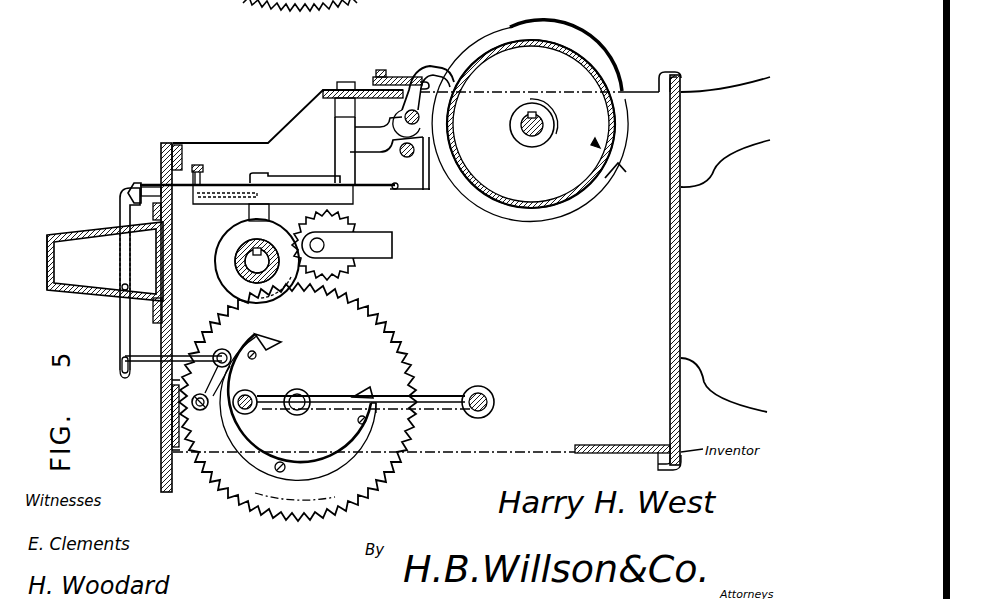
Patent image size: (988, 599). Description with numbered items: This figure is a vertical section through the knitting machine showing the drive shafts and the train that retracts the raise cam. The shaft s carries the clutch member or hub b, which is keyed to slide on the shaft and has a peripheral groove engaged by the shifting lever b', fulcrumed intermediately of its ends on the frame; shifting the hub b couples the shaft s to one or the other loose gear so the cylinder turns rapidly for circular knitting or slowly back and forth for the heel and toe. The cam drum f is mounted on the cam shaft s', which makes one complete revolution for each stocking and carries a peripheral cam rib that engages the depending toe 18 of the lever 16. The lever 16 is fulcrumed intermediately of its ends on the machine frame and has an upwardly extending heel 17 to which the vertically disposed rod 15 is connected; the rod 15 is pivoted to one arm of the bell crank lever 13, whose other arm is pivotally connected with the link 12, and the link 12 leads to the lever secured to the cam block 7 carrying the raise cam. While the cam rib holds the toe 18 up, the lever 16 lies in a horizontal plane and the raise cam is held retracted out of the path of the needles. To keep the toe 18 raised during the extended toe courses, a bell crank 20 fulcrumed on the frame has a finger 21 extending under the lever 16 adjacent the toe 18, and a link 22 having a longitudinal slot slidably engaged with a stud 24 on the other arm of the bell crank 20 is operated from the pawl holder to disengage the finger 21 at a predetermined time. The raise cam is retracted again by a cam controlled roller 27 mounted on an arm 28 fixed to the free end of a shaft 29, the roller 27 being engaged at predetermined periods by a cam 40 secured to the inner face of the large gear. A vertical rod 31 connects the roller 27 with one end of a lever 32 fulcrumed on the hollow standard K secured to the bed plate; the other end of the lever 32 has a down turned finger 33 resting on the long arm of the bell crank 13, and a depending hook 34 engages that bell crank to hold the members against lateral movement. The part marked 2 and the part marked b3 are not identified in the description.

The shaft 2 is at (430, 407).
The block 7 is at (285, 522).
The link 12 is at (163, 150).
The bell crank lever 13 is at (88, 248).
The vertically disposed rod 15 is at (230, 186).
The lever 16 is at (443, 183).
The heel 17 is at (397, 190).
The toe 18 is at (440, 63).
The bell crank 20 is at (397, 76).
The finger 21 is at (462, 100).
The link 22 is at (423, 78).
The stud 24 is at (378, 70).
The cam controlled roller 27 is at (218, 348).
The arm 28 is at (172, 388).
The shaft 29 is at (172, 435).
The vertical rod 31 is at (140, 357).
The lever 32 is at (121, 338).
The down turned finger 33 is at (132, 205).
The depending hook 34 is at (132, 183).
The cam 40 is at (232, 473).
The clutch member or hub b is at (238, 253).
The shifting lever b' is at (268, 173).
The screw b3 is at (195, 165).
The cam drum f is at (597, 172).
The shaft s is at (340, 269).
The cam shaft s' is at (552, 173).
The hollow standard K is at (68, 222).